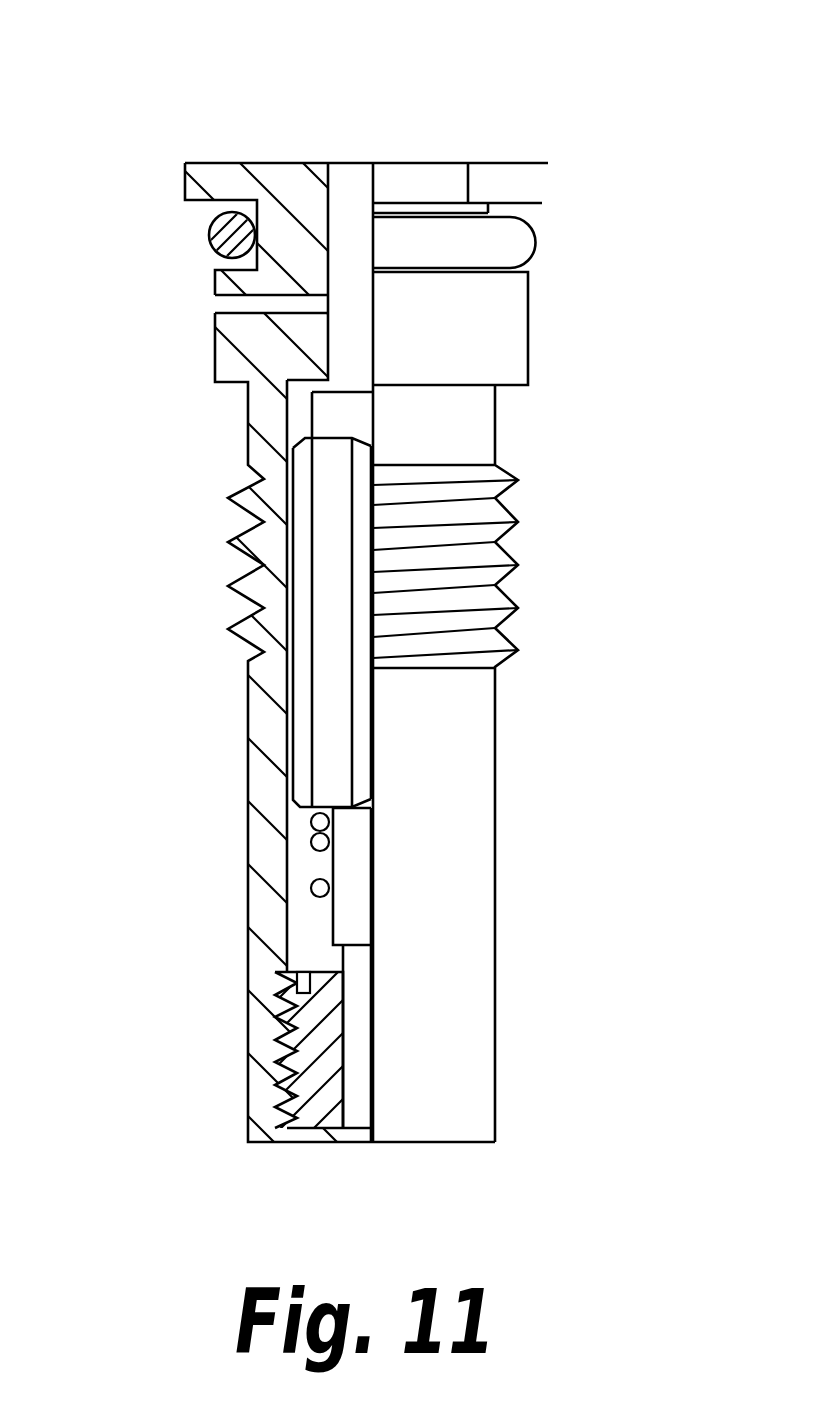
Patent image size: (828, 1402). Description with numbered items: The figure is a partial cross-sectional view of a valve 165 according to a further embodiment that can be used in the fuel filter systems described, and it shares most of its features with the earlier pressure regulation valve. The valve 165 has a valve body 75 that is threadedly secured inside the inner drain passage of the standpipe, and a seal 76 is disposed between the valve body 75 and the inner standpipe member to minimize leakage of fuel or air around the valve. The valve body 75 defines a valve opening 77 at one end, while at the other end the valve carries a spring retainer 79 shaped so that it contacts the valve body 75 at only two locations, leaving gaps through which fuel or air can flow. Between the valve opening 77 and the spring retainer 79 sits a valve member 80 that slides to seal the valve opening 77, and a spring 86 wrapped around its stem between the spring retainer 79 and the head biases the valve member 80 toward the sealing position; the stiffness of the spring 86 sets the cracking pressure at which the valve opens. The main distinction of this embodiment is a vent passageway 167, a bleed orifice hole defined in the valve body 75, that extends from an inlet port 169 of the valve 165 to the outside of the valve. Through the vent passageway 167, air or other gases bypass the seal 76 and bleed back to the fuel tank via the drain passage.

The valve body 75 is at (282, 183).
The inlet port 169 is at (338, 168).
The valve opening 77 is at (352, 352).
The seal 76 is at (208, 238).
The valve 165 is at (513, 300).
The vent passageway 167 is at (212, 310).
The valve member 80 is at (333, 737).
The spring 86 is at (311, 896).
The spring retainer 79 is at (282, 1072).